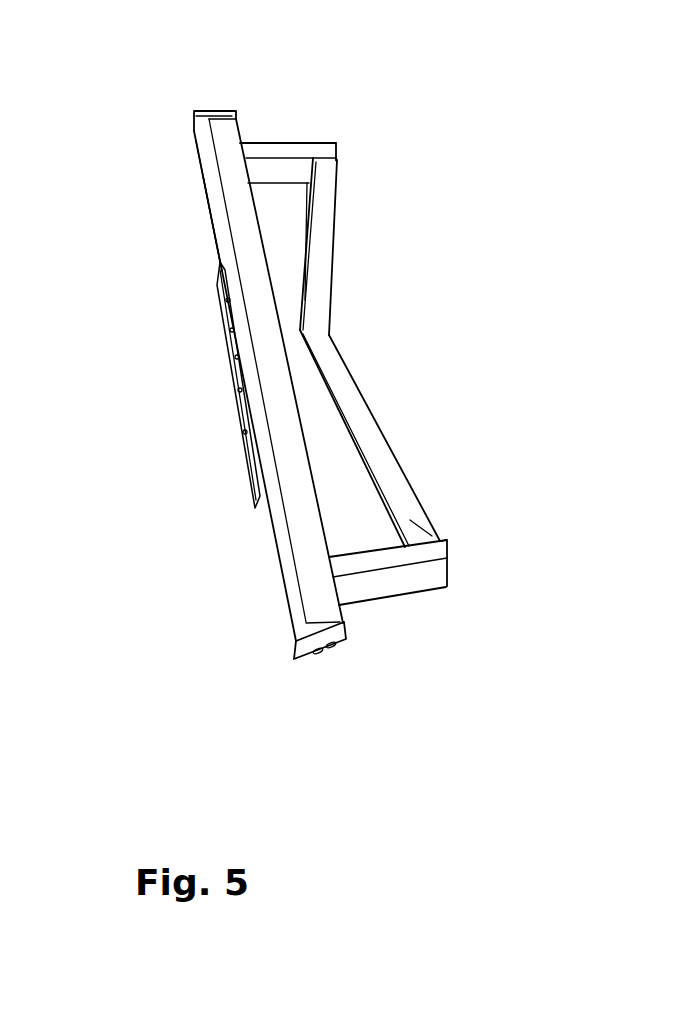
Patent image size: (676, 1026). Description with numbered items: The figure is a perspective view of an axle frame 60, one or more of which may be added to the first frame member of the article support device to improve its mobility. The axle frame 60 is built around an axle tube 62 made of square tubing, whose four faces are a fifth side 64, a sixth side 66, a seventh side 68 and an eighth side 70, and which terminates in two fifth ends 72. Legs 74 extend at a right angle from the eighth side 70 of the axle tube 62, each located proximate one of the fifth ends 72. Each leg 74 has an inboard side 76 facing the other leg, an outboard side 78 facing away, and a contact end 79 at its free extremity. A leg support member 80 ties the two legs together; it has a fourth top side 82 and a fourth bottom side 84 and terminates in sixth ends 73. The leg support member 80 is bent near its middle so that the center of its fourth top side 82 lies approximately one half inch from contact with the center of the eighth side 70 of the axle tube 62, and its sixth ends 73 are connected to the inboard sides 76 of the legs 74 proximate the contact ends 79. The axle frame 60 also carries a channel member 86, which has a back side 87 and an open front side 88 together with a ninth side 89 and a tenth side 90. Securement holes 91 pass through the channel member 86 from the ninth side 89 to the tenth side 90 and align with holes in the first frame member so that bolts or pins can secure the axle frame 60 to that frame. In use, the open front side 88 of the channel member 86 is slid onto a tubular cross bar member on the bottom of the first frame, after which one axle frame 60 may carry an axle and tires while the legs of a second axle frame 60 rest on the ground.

The axle frame 60 is at (248, 702).
The axle tube 62 is at (283, 590).
The fifth side 64 is at (226, 153).
The sixth side 66 is at (209, 183).
The seventh side 68 is at (210, 224).
The eighth side 70 is at (240, 128).
The fifth ends 72 is at (214, 103).
The sixth ends 73 is at (335, 162).
The legs 74 is at (325, 136).
The inboard side 76 is at (277, 175).
The outboard side 78 is at (306, 136).
The contact end 79 is at (345, 142).
The leg support member 80 is at (322, 238).
The fourth top side 82 is at (346, 451).
The fourth bottom side 84 is at (379, 415).
The channel member 86 is at (236, 431).
The back side 87 is at (250, 288).
The open front side 88 is at (211, 271).
The ninth side 89 is at (227, 344).
The tenth side 90 is at (312, 294).
The securement holes 91 is at (233, 390).